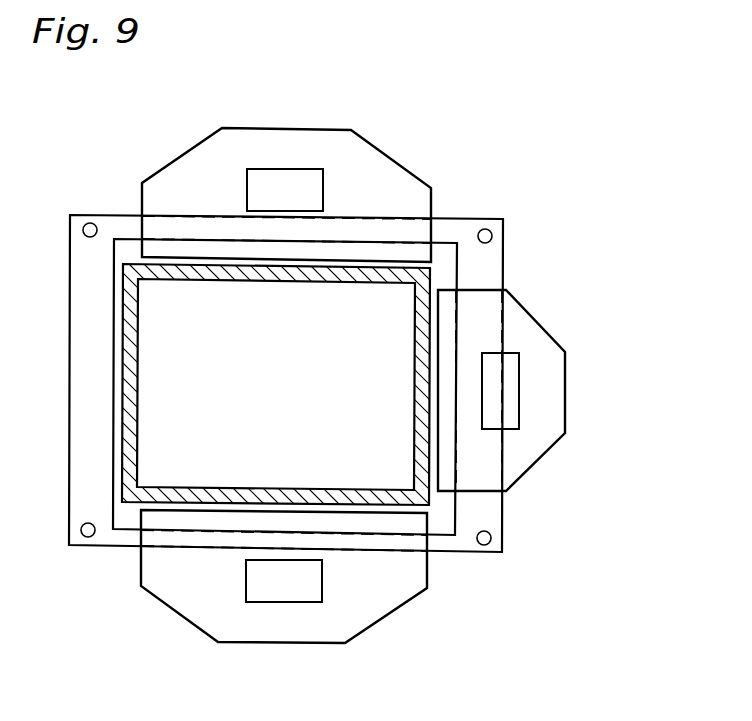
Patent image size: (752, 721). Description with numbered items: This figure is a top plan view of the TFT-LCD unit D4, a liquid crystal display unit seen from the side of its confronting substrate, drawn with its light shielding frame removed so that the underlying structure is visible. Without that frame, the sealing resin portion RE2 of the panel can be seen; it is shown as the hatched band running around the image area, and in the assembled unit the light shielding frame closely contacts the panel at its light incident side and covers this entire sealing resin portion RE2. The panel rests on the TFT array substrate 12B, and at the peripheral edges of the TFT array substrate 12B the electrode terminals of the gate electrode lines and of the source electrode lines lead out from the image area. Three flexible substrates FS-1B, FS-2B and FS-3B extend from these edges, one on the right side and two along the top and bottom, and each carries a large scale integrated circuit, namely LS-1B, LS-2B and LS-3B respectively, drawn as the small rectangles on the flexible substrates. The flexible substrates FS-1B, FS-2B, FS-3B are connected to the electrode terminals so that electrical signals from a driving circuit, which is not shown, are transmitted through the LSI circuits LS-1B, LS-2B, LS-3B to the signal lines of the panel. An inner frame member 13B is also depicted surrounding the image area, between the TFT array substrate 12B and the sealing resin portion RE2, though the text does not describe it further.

The TFT-LCD unit D4 is at (527, 173).
The TFT array substrate 12B is at (460, 267).
The holding frame 13B is at (433, 328).
The sealing resin portion RE2 is at (133, 373).
The flexible substrate FS-3B is at (363, 182).
The large scale integrated circuit LS-3B is at (283, 180).
The flexible substrate FS-1B is at (527, 452).
The large scale integrated circuit LS-1B is at (513, 392).
The flexible substrate FS-2B is at (385, 593).
The large scale integrated circuit LS-2B is at (297, 588).